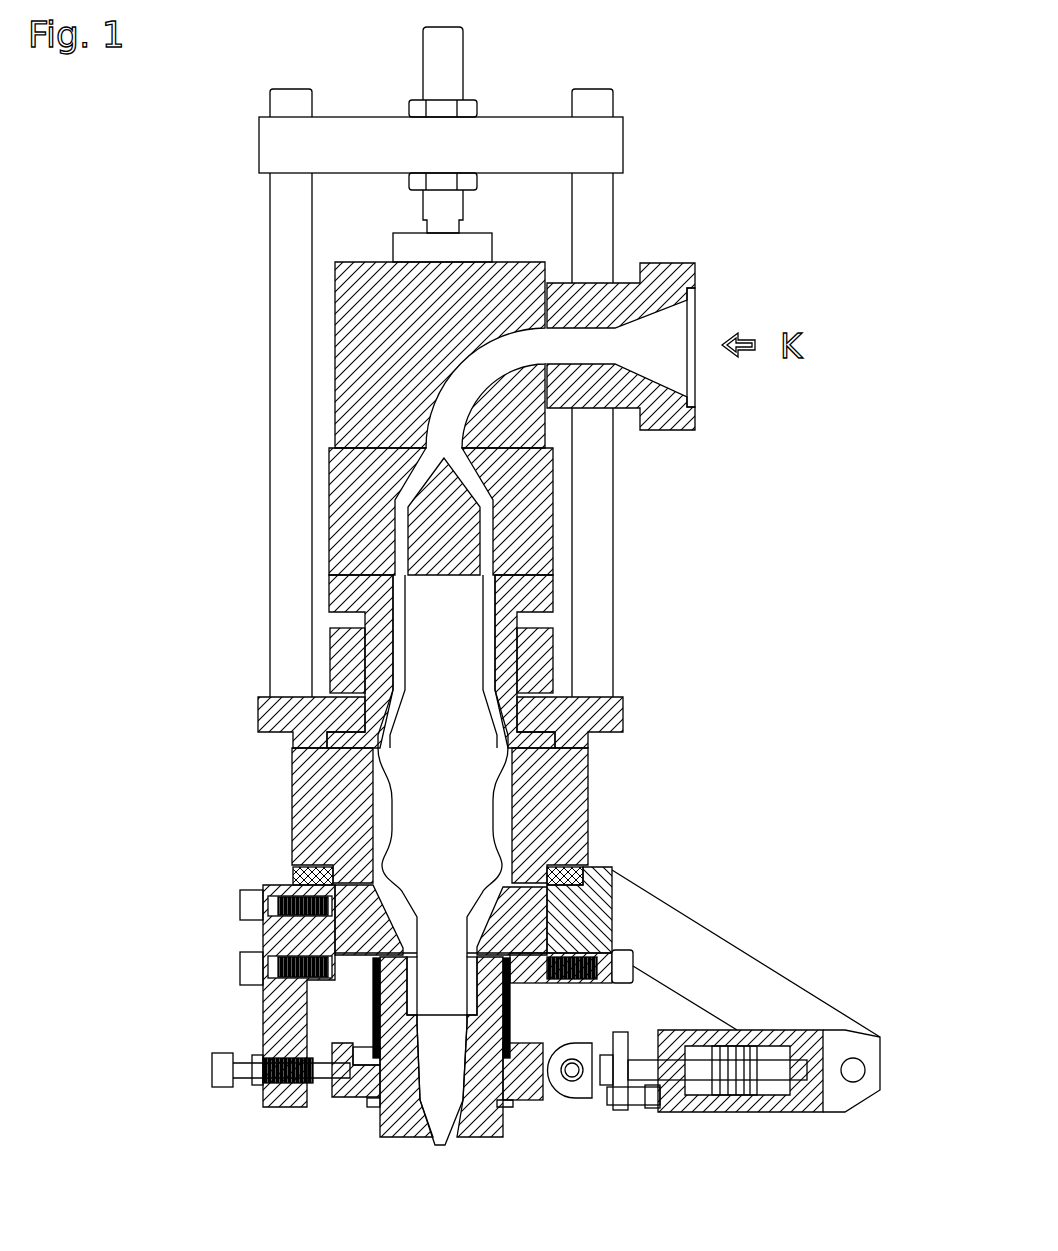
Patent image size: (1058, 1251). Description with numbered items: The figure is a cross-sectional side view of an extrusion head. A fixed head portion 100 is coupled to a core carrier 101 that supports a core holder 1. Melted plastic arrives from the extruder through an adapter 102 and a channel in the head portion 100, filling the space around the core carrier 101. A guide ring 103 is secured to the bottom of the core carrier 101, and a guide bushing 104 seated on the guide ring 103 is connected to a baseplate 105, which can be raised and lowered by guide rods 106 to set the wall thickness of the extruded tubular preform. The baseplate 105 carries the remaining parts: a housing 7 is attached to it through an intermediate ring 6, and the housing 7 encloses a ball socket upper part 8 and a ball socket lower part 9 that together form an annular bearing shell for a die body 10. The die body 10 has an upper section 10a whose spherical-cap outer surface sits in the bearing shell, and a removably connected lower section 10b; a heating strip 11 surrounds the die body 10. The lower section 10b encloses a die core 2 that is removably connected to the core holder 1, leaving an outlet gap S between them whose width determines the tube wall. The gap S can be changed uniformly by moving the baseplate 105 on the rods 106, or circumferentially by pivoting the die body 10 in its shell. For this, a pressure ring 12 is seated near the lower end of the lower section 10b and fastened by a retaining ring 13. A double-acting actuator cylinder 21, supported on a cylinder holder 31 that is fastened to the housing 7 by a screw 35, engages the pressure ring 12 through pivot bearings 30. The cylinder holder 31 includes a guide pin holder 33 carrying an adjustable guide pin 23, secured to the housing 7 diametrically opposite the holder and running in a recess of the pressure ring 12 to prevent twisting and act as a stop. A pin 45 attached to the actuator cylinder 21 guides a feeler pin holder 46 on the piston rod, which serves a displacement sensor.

The core holder 1 is at (425, 634).
The die core 2 is at (480, 1125).
The outlet gap S is at (453, 1140).
The intermediate ring 6 is at (328, 766).
The housing 7 is at (295, 868).
The ball socket upper part 8 is at (375, 935).
The ball socket lower part 9 is at (600, 872).
The die body 10 is at (393, 1137).
The upper section 10a is at (300, 957).
The lower section 10b is at (512, 1112).
The heating strip 11 is at (375, 1012).
The pressure ring 12 is at (333, 1093).
The retaining ring 13 is at (370, 1104).
The actuator cylinder 21 is at (740, 1112).
The guide pin 23 is at (214, 1090).
The pivot bearing 30 is at (858, 1062).
The cylinder holder 31 is at (700, 958).
The guide pin holder 33 is at (296, 922).
The screw 35 is at (630, 955).
The pin 45 is at (636, 1108).
The feeler pin holder 46 is at (620, 1043).
The head portion 100 is at (368, 352).
The core carrier 101 is at (352, 468).
The adapter 102 is at (670, 403).
The guide ring 103 is at (536, 602).
The guide bushing 104 is at (546, 654).
The baseplate 105 is at (600, 718).
The guide rods 106 is at (285, 243).